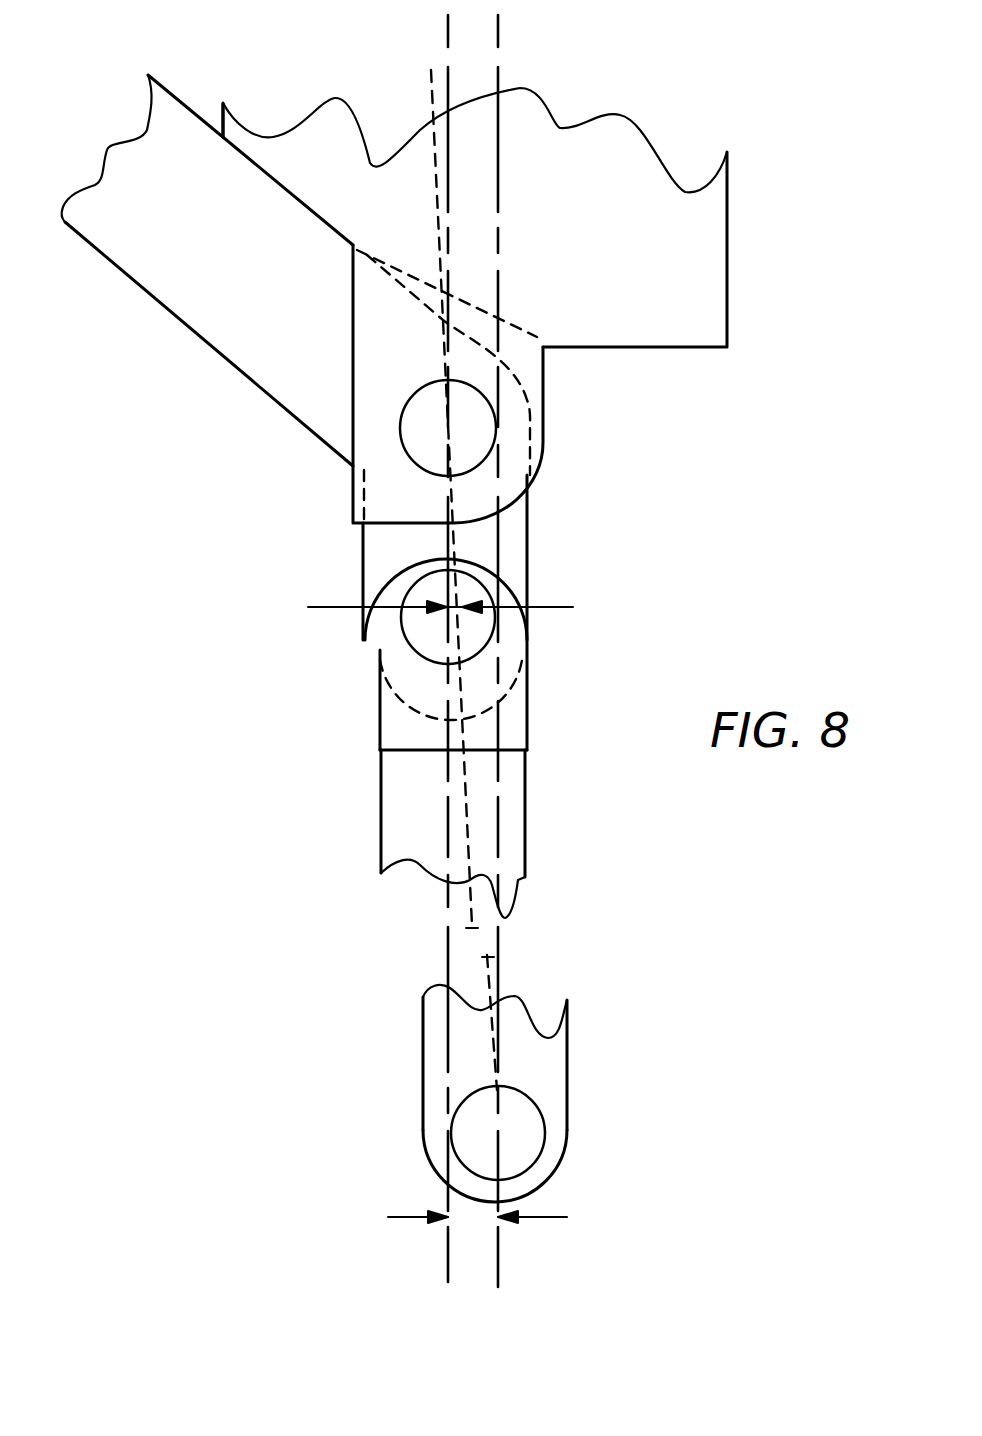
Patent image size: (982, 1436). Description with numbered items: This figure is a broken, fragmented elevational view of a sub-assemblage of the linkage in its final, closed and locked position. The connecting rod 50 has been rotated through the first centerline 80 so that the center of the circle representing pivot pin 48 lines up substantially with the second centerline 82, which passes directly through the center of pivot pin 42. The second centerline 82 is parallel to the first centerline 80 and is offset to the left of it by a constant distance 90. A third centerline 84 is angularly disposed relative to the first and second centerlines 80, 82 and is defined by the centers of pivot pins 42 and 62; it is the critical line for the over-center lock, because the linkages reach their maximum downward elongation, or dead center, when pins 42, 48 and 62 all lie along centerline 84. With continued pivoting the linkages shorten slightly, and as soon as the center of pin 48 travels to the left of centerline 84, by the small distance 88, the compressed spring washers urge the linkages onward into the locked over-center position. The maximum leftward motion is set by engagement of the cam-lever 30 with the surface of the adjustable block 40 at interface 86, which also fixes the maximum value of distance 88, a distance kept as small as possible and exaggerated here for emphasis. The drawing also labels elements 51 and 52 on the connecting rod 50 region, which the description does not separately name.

The cam-lever 30 is at (157, 230).
The adjustable block 40 is at (635, 262).
The pivot pin 42 is at (430, 438).
The pivot pin 48 is at (418, 625).
The connecting rod 50 is at (525, 836).
The collar 51 is at (525, 667).
The lower shaft end 52 is at (568, 1103).
The pivot pin 62 is at (523, 1142).
The first centerline 80 is at (498, 47).
The second centerline 82 is at (448, 47).
The third centerline 84 is at (431, 93).
The interface 86 is at (287, 198).
The distance 88 is at (416, 610).
The constant distance 90 is at (453, 1218).